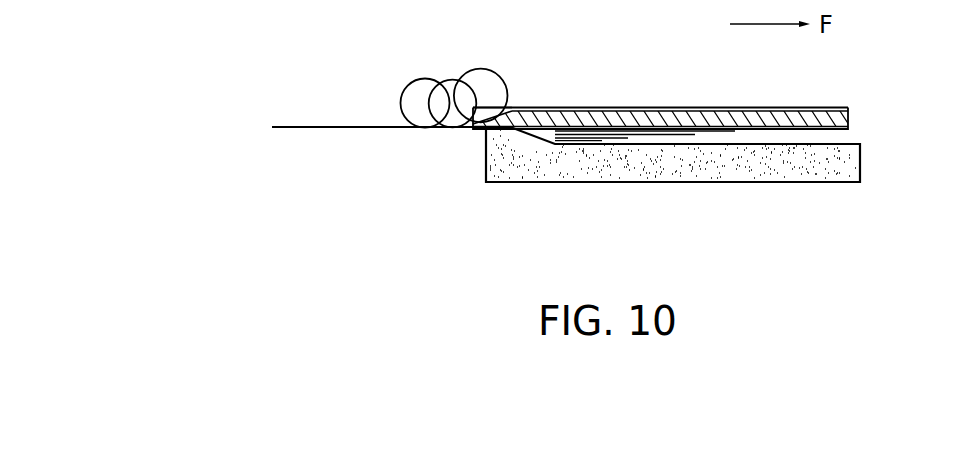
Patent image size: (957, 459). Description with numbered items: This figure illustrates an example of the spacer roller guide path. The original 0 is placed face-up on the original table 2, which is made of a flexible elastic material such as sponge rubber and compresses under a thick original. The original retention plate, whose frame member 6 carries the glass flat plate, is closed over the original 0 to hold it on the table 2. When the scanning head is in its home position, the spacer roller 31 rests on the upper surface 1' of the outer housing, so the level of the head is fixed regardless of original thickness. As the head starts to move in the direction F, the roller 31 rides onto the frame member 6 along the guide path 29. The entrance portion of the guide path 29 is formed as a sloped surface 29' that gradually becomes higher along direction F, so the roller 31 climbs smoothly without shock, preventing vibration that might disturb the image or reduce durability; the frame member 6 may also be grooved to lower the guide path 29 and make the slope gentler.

The upper surface of the outer housing 1' is at (379, 91).
The spacer roller 31 is at (424, 129).
The guide path 29 is at (660, 80).
The sloped surface 29' is at (518, 88).
The frame member 6 is at (767, 121).
The original 0 is at (838, 137).
The original table 2 is at (805, 168).